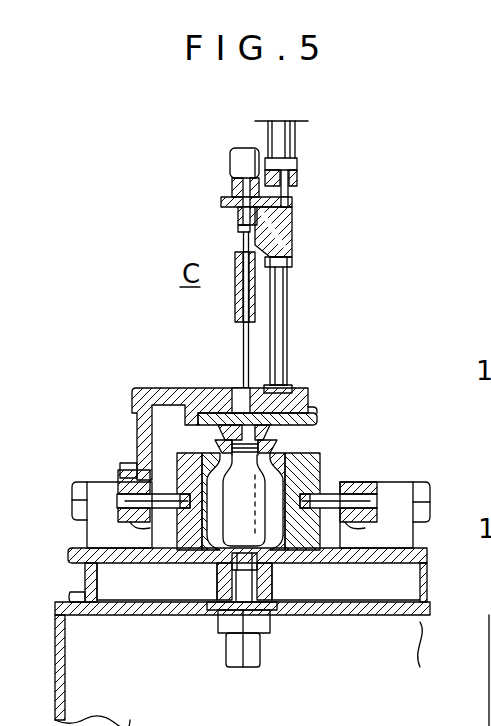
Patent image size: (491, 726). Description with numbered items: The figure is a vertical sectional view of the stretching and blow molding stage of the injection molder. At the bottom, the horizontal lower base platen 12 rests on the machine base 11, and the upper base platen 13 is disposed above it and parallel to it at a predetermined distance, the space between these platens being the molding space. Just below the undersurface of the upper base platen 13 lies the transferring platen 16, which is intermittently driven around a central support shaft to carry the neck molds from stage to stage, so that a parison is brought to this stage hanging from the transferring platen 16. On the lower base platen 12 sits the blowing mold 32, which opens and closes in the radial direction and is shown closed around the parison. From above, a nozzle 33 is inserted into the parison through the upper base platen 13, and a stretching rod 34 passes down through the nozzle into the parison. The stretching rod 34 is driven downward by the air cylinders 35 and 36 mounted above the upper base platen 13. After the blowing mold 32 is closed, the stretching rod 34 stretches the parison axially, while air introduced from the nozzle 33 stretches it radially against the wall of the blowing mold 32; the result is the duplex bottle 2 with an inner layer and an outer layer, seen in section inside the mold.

The duplex bottle 2 is at (258, 472).
The machine base 11 is at (58, 663).
The lower base platen 12 is at (77, 552).
The upper base platen 13 is at (165, 390).
The transferring platen 16 is at (305, 420).
The blowing mold 32 is at (292, 478).
The nozzle 33 is at (238, 302).
The stretching rod 34 is at (244, 348).
The air cylinder 35 is at (282, 138).
The air cylinder 36 is at (245, 162).